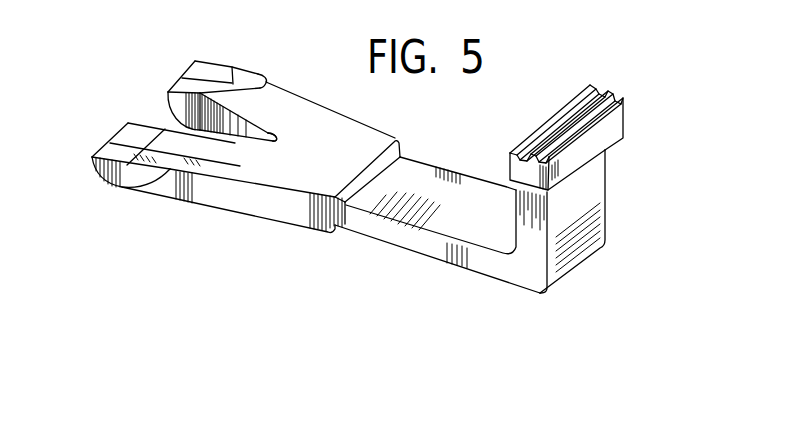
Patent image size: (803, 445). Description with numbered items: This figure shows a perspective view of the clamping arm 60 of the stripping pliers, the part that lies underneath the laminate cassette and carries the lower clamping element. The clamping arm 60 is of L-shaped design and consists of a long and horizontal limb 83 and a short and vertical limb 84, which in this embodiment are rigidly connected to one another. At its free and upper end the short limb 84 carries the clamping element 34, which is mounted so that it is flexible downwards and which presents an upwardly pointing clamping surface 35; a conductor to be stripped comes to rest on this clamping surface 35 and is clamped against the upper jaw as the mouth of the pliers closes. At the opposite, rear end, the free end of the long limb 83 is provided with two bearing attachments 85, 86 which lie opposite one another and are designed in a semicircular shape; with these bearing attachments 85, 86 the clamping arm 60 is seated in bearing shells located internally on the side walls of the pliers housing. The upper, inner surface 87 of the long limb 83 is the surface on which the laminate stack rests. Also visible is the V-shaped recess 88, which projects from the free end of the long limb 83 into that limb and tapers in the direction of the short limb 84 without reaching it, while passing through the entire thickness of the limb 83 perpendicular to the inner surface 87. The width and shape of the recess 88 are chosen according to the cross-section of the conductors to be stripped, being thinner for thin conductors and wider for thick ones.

The clamping element 34 is at (620, 112).
The clamping surface 35 is at (603, 88).
The clamping arm 60 is at (270, 244).
The long limb 83 is at (333, 229).
The short limb 84 is at (590, 192).
The bearing attachment 85 is at (125, 178).
The bearing attachment 86 is at (247, 80).
The inner surface 87 is at (224, 163).
The V-shaped recess 88 is at (152, 108).